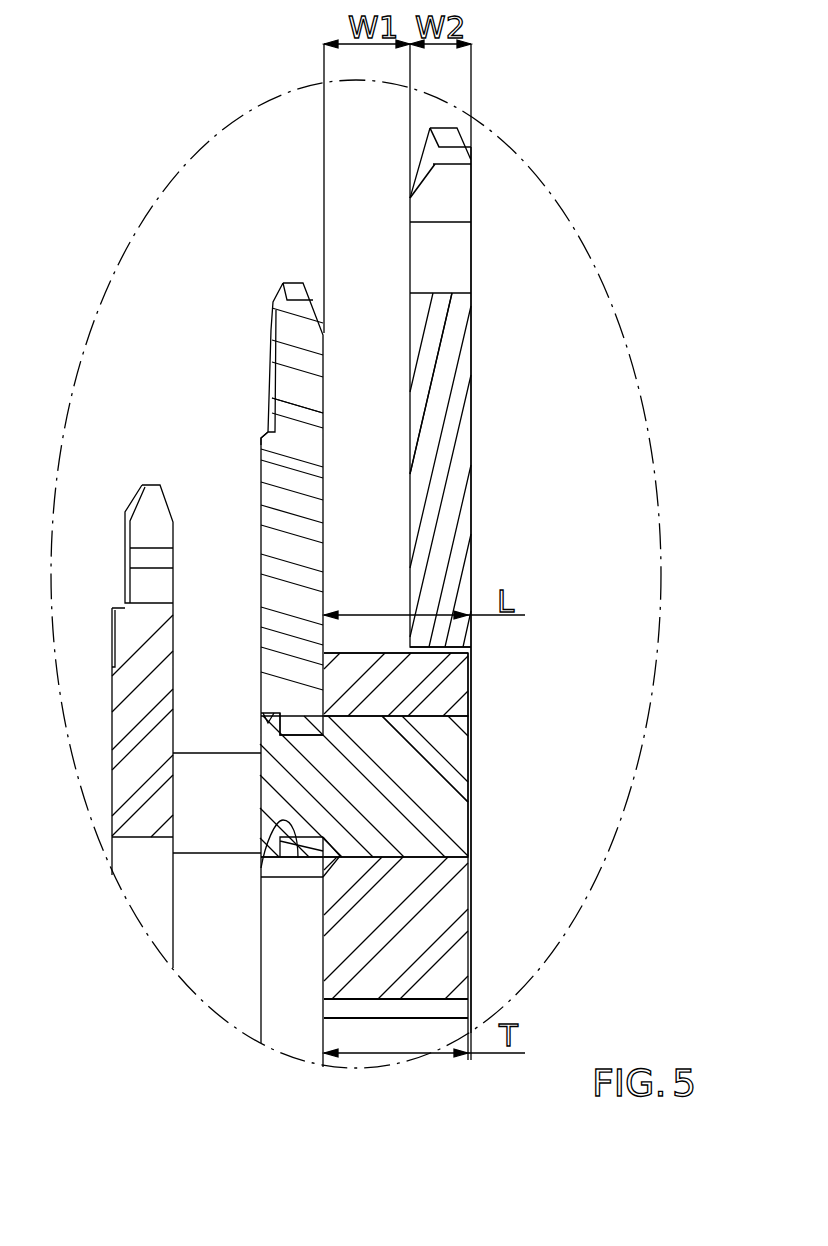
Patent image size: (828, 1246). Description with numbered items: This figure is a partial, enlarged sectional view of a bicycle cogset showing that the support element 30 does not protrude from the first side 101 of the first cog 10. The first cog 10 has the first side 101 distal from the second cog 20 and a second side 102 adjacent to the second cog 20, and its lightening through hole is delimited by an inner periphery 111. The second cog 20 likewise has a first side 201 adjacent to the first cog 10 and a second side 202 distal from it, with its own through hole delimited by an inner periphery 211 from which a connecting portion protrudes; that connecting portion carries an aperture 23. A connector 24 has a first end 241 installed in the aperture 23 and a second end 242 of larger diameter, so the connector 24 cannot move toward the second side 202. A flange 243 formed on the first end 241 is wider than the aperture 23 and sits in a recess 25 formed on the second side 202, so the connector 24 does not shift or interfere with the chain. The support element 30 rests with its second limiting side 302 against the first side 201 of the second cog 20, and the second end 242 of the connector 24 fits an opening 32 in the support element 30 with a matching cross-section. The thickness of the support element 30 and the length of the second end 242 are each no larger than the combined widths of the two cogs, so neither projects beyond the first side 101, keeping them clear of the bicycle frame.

The first cog 10 is at (452, 340).
The first side 101 is at (470, 375).
The second side 102 is at (470, 408).
The inner periphery 111 is at (410, 650).
The second cog 20 is at (293, 357).
The first side 201 is at (318, 425).
The second side 202 is at (263, 445).
The recess 25 is at (263, 712).
The flange 243 is at (272, 727).
The opening 32 is at (418, 720).
The connector 24 is at (417, 778).
The second end 242 is at (433, 830).
The aperture 23 is at (260, 870).
The first end 241 is at (297, 873).
The inner periphery 211 is at (317, 877).
The support element 30 is at (430, 928).
The second limiting side 302 is at (323, 967).